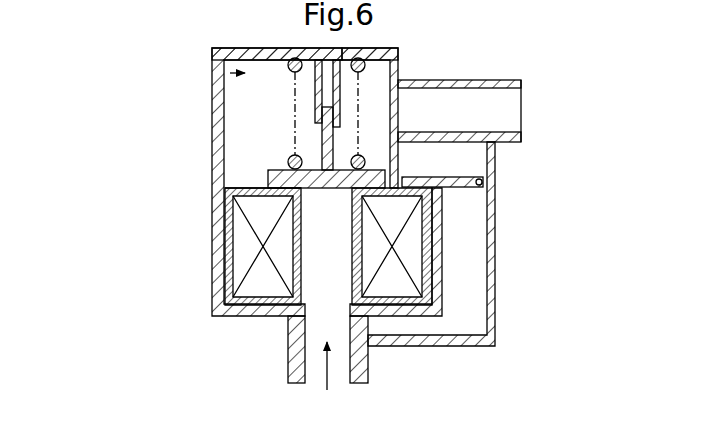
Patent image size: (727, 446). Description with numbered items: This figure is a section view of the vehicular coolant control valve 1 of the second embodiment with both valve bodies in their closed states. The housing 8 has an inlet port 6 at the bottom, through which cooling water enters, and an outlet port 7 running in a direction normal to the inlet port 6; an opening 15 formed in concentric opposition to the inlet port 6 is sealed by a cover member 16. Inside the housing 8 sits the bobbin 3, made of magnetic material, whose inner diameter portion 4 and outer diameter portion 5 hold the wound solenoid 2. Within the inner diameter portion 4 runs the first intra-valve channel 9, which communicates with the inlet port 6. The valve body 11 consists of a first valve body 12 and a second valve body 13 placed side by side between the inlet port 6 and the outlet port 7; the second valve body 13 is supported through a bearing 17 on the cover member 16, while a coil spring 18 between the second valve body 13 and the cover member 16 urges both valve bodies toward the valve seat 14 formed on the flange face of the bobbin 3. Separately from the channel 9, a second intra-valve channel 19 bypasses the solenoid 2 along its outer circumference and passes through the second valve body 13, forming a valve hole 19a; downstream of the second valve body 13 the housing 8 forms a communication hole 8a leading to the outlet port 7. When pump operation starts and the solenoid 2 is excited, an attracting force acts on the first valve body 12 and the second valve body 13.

The coolant control valve 1 is at (105, 108).
The solenoid 2 is at (240, 242).
The bobbin 3 is at (300, 275).
The inner diameter portion 4 is at (252, 306).
The outer diameter portion 5 is at (212, 268).
The inlet port 6 is at (317, 378).
The outlet port 7 is at (518, 110).
The housing 8 is at (212, 136).
The communication hole 8a is at (405, 137).
The intra-valve channel 9 is at (337, 273).
The valve body 11 is at (392, 146).
The first valve body 12 is at (268, 171).
The second valve body 13 is at (463, 175).
The valve seat 14 is at (243, 187).
The opening 15 is at (218, 70).
The cover member 16 is at (398, 49).
The bearing 17 is at (319, 90).
The coil spring 18 is at (366, 65).
The second intra-valve channel 19 is at (478, 280).
The valve hole 19a is at (457, 195).